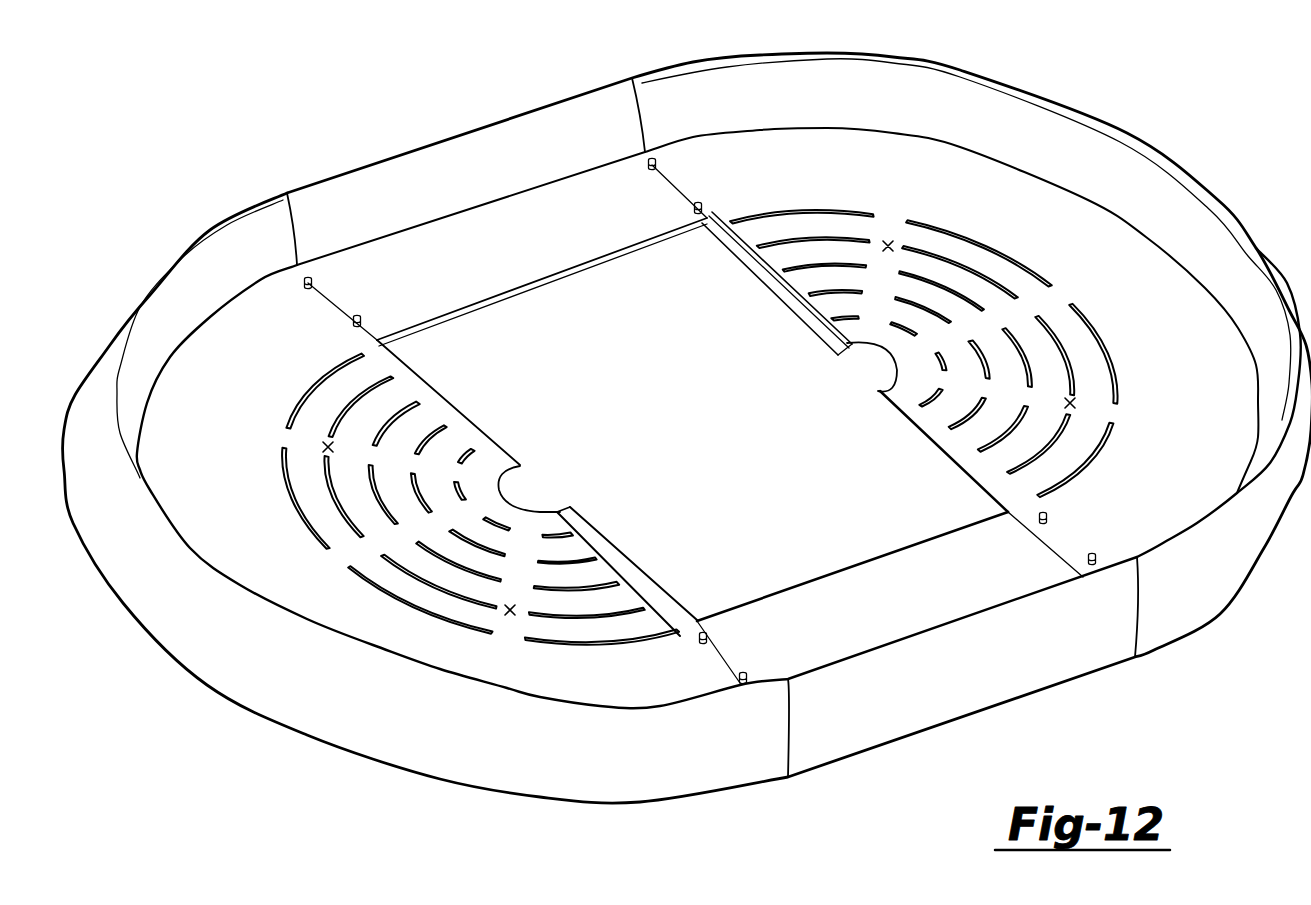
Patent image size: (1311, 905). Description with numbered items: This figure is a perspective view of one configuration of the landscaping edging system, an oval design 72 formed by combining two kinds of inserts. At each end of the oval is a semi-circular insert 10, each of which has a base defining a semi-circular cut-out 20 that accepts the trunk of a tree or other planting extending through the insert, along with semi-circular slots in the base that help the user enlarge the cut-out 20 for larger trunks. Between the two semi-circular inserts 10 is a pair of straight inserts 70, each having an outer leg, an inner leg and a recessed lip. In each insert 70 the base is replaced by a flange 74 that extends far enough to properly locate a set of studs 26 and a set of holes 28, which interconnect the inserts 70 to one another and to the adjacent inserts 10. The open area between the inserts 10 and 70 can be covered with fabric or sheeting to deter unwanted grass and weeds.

The semi-circular insert 10 is at (1127, 175).
The semi-circular cut-out 20 is at (876, 356).
The studs 26 is at (702, 207).
The holes 28 is at (312, 288).
The insert 70 is at (413, 176).
The oval design 72 is at (532, 68).
The flange 74 is at (553, 256).